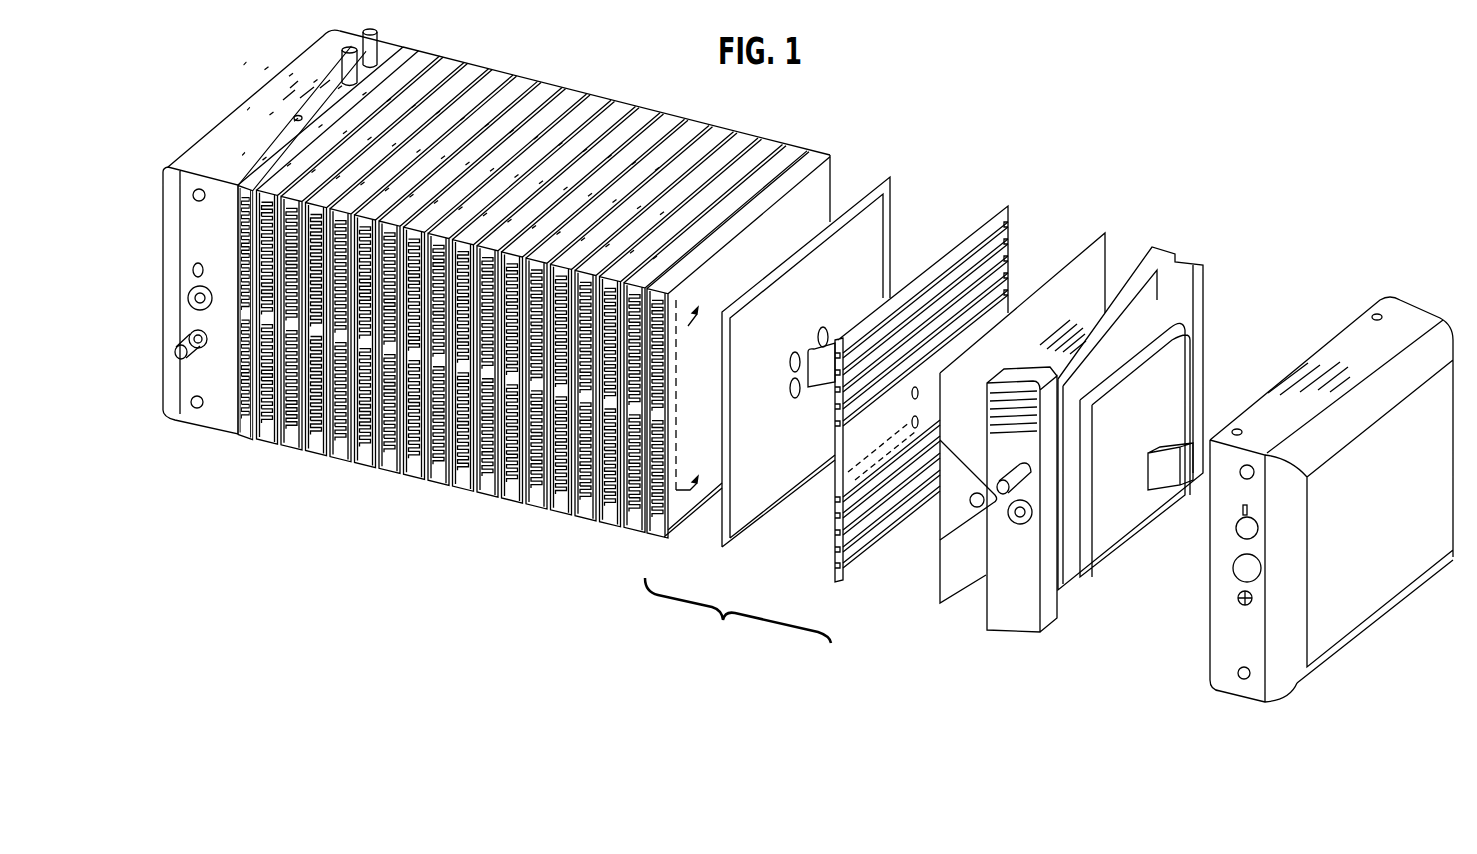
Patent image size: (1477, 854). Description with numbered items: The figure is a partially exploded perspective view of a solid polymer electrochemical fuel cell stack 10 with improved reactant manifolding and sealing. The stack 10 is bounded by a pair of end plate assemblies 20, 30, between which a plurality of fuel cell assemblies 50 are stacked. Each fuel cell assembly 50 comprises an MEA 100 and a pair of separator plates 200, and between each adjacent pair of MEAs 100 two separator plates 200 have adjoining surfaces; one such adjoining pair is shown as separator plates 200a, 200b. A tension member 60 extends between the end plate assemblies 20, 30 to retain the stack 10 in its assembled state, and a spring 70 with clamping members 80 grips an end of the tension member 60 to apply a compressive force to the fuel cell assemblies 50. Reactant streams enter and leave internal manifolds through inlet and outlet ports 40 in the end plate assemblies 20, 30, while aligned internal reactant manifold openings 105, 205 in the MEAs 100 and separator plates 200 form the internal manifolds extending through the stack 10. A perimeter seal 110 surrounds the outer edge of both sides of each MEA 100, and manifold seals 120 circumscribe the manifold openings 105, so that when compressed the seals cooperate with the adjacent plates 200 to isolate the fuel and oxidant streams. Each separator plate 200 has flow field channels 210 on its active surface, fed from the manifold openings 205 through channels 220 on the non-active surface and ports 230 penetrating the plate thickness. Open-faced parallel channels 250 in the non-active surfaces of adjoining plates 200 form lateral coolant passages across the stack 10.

The solid polymer electrochemical fuel cell stack 10 is at (1095, 158).
The end plate assembly 20 is at (1007, 638).
The end plate assembly 30 is at (236, 437).
The inlet and outlet ports 40 is at (201, 302).
The fuel cell assembly 50 is at (738, 617).
The tension member 60 is at (1209, 440).
The spring 70 is at (1200, 300).
The clamping members 80 is at (1164, 470).
The MEA 100 is at (783, 142).
The internal reactant manifold opening 105 is at (832, 332).
The perimeter seal 110 is at (867, 185).
The manifold seal 120 is at (795, 373).
The separator plate 200 is at (910, 397).
The separator plate 200a is at (810, 152).
The separator plate 200b is at (831, 150).
The internal reactant manifold opening 205 is at (916, 430).
The flow field channels 210 is at (602, 530).
The channels 220 is at (840, 470).
The port 230 is at (550, 514).
The open-faced parallel channels 250 is at (363, 450).